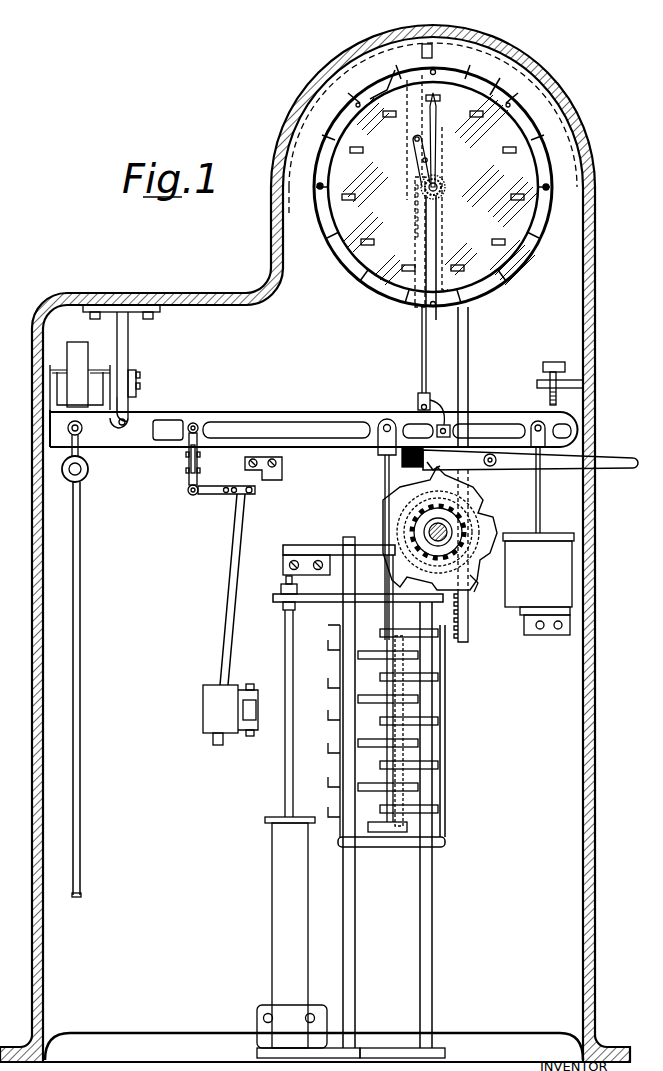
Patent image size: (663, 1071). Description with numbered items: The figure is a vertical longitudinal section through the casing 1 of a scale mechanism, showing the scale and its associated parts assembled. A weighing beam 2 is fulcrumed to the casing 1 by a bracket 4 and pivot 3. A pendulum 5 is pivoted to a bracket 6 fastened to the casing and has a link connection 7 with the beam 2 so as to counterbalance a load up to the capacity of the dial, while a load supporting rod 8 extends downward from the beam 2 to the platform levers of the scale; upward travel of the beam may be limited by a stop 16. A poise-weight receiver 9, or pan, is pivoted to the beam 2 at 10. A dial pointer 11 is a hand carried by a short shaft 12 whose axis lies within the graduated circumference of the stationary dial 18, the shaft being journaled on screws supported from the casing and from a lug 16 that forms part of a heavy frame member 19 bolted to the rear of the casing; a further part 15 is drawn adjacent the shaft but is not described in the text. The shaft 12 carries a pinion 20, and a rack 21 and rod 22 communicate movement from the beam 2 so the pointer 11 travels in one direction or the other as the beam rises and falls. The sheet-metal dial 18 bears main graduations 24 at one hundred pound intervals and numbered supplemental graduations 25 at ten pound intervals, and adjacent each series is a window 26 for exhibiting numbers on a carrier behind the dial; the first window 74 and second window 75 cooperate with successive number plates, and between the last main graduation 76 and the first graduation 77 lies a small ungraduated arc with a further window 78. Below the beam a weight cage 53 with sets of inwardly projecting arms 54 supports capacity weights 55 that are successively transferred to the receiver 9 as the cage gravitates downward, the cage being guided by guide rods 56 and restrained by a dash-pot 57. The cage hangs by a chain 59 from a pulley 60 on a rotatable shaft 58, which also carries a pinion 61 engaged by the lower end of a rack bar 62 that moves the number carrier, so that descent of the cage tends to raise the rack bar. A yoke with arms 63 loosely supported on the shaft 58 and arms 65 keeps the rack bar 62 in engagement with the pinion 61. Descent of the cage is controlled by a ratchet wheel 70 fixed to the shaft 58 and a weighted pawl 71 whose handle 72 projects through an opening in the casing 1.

The scale casing 1 is at (36, 660).
The weighing beam 2 is at (280, 422).
The pivot 3 is at (121, 435).
The bracket 4 is at (136, 405).
The pendulum 5 is at (218, 694).
The bracket 6 is at (270, 481).
The link connection 7 is at (188, 468).
The load supporting rod 8 is at (80, 692).
The poise-weight receiver 9 is at (385, 834).
The pivot 10 is at (387, 420).
The dial pointer 11 is at (437, 98).
The short shaft 12 is at (442, 187).
The lever 15 is at (418, 158).
The lug 16 is at (565, 340).
The dial 18 is at (532, 232).
The frame member 19 is at (444, 232).
The pinion 20 is at (441, 183).
The rack 21 is at (415, 221).
The rod 22 is at (422, 348).
The main graduations 24 is at (520, 146).
The supplemental graduations 25 is at (540, 172).
The window 26 is at (514, 192).
The weight cage 53 is at (400, 584).
The cage arms 54 is at (358, 715).
The weights 55 is at (410, 638).
The guide rods 56 is at (345, 966).
The dash-pot 57 is at (308, 817).
The rotatable shaft 58 is at (430, 531).
The chain 59 is at (392, 602).
The pulley 60 is at (415, 520).
The pinion 61 is at (412, 510).
The rack bar 62 is at (468, 348).
The yoke arms 63 is at (472, 515).
The yoke arms 65 is at (474, 585).
The ratchet wheel 70 is at (486, 530).
The pawl 71 is at (428, 467).
The handle 72 is at (634, 456).
The first window 74 is at (445, 92).
The second window 75 is at (506, 101).
The last main graduation 76 is at (400, 40).
The first graduation 77 is at (433, 72).
The window 78 is at (388, 117).